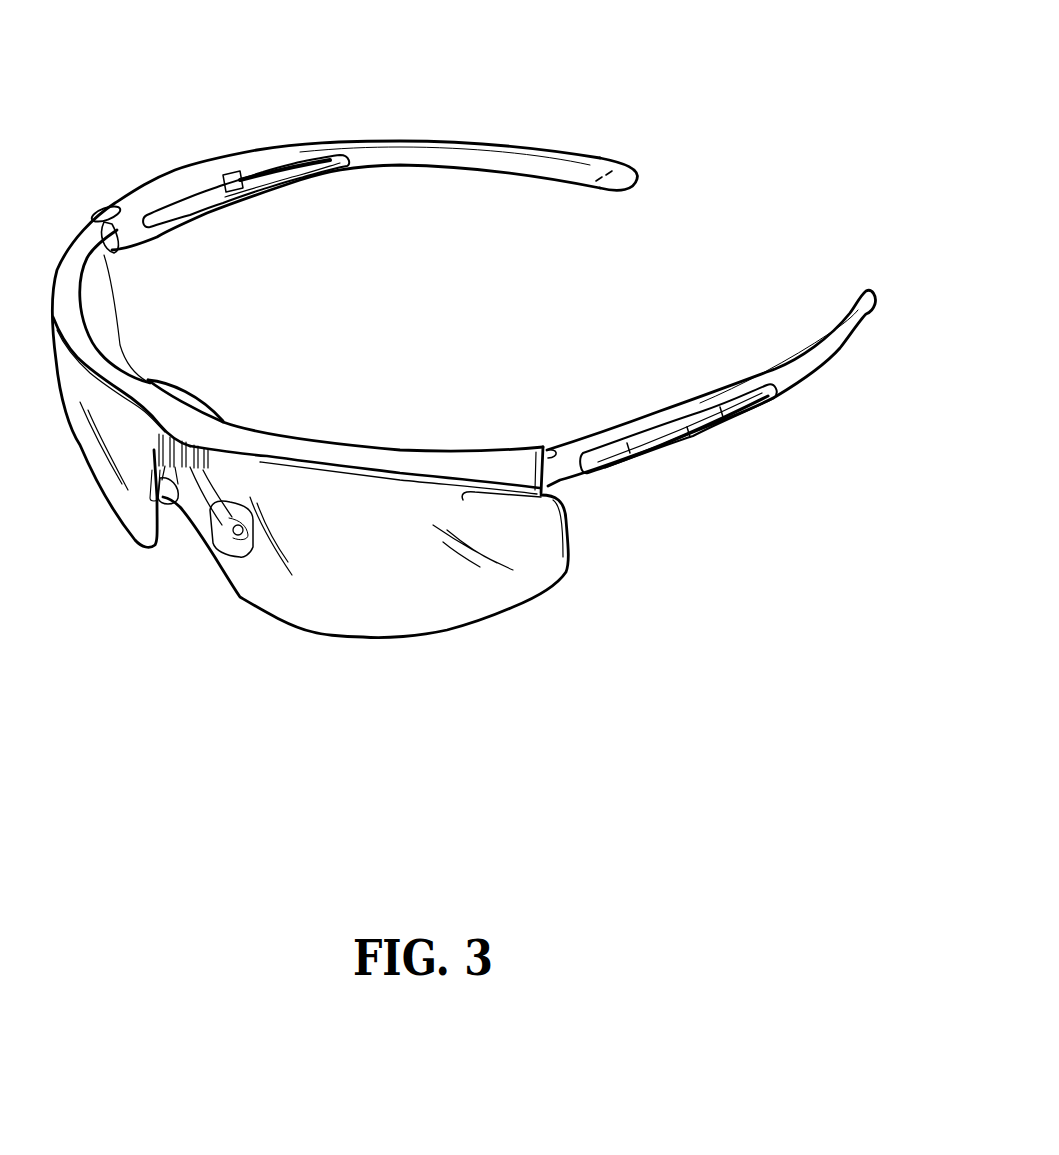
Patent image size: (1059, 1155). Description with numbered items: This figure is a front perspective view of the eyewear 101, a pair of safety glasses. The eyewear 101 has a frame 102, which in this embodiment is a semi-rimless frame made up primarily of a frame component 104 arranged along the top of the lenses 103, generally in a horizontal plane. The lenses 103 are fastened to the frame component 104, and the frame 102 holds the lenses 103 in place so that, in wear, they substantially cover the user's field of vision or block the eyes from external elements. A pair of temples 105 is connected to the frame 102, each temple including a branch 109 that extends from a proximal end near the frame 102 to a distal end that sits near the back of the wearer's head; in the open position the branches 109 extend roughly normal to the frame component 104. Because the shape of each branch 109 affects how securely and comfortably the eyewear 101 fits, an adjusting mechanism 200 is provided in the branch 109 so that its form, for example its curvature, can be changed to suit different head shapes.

The eyewear 101 is at (598, 85).
The frame 102 is at (432, 470).
The lenses 103 is at (340, 603).
The frame component 104 is at (70, 302).
The temples 105 is at (860, 292).
The branch 109 is at (460, 152).
The adjusting mechanism 200 is at (326, 106).